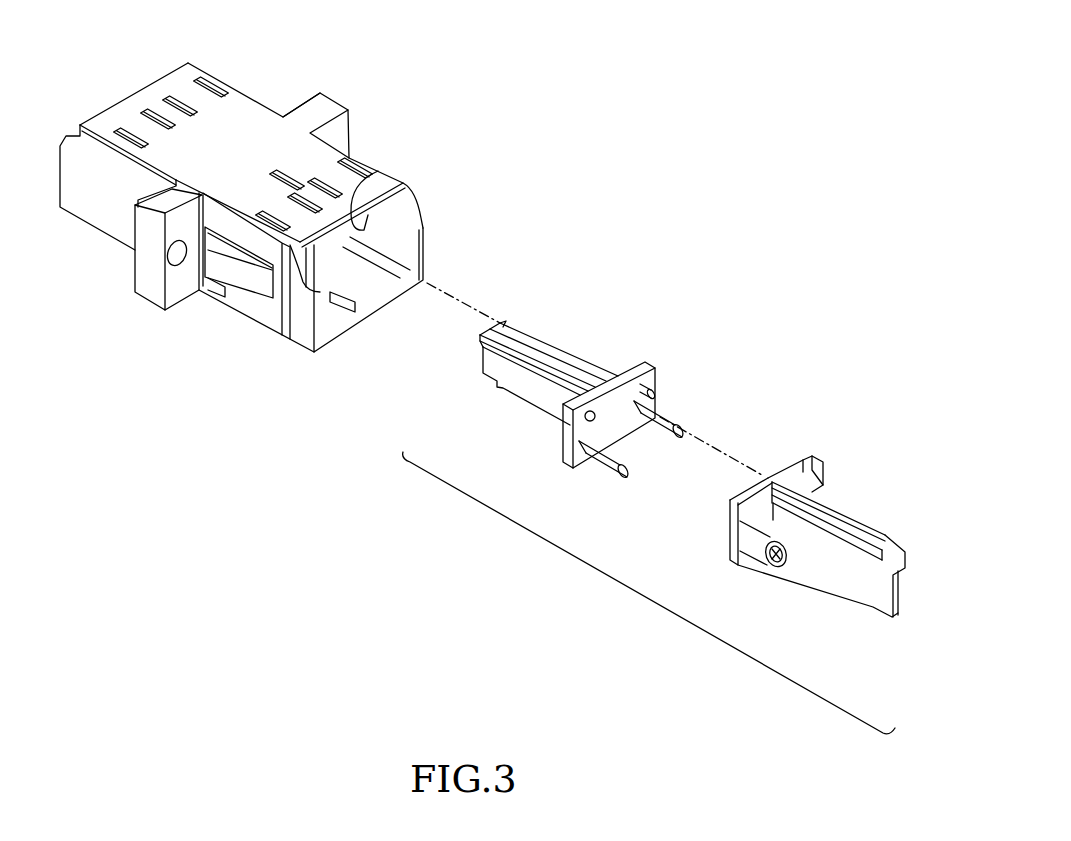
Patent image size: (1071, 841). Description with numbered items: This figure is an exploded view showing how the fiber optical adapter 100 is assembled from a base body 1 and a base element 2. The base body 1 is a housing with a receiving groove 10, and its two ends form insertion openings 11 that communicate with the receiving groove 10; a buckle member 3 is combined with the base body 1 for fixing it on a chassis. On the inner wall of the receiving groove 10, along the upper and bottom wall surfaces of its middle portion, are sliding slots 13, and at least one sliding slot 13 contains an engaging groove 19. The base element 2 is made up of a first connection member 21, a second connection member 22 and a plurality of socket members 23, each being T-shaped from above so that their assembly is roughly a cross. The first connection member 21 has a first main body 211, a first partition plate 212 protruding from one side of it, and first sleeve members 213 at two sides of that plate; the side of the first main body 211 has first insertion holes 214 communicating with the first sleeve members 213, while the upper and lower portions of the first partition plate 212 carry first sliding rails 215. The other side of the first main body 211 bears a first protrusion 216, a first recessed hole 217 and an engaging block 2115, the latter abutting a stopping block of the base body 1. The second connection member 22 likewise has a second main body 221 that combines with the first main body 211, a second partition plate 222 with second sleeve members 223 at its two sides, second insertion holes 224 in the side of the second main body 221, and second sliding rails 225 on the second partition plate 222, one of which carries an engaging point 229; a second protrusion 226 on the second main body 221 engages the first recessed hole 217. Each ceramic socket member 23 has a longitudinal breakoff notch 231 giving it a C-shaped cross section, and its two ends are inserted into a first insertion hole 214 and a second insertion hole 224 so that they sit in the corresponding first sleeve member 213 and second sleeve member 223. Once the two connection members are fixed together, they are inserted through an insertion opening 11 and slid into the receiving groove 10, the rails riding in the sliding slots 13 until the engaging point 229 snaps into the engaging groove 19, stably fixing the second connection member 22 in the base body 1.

The fiber optical adapter 100 is at (846, 82).
The base body 1 is at (244, 113).
The engaging groove 19 is at (283, 177).
The sliding slots 13 is at (352, 215).
The receiving groove 10 is at (390, 238).
The insertion openings 11 is at (405, 250).
The buckle member 3 is at (243, 297).
The base element 2 is at (650, 598).
The first connection member 21 is at (500, 393).
The first sliding rails 215 is at (527, 330).
The engaging block 2115 is at (580, 398).
The first recessed hole 217 is at (604, 372).
The first protrusion 216 is at (646, 364).
The first insertion holes 214 is at (660, 382).
The first main body 211 is at (480, 347).
The first partition plate 212 is at (533, 398).
The first sleeve members 213 is at (567, 455).
The socket members 23 is at (676, 430).
The breakoff notch 231 is at (603, 475).
The second protrusion 226 is at (742, 478).
The second connection member 22 is at (907, 590).
The second main body 221 is at (730, 530).
The second sliding rails 225 is at (865, 532).
The engaging point 229 is at (817, 487).
The second partition plate 222 is at (850, 570).
The second sleeve members 223 is at (757, 560).
The second insertion holes 224 is at (783, 567).